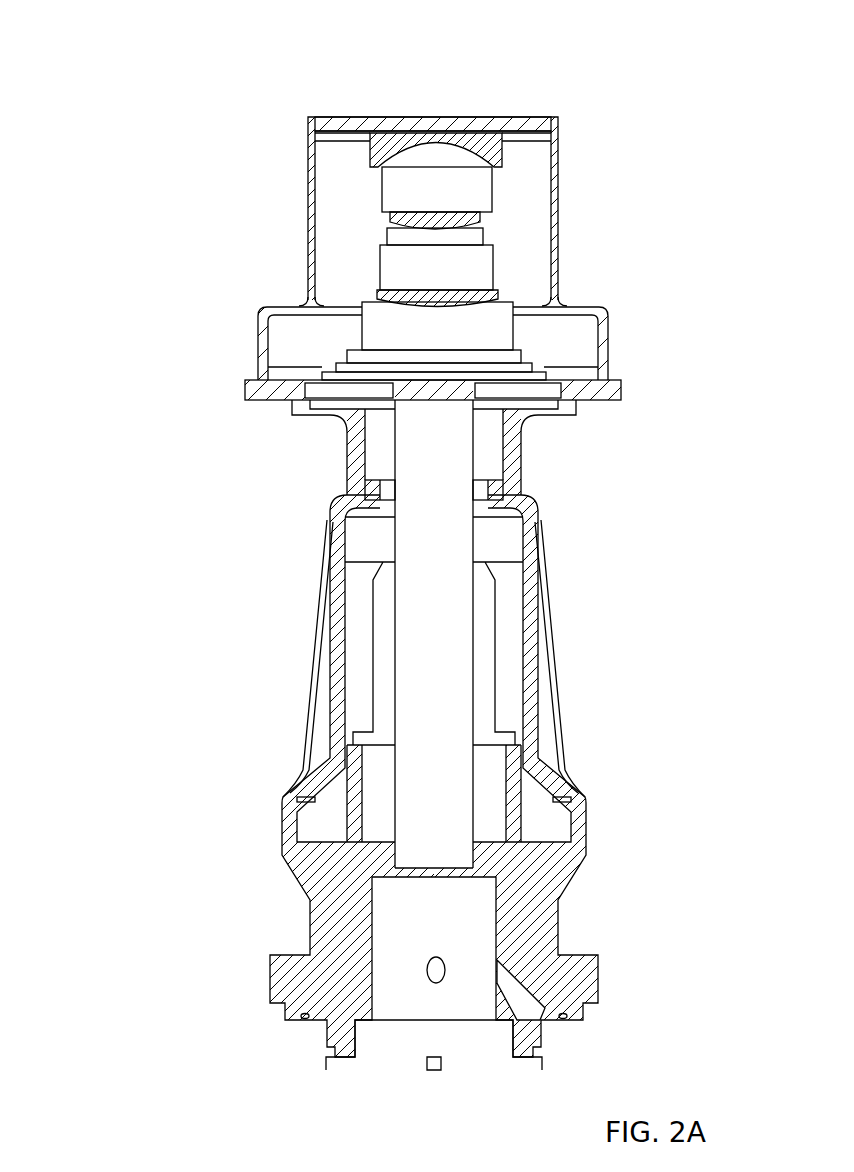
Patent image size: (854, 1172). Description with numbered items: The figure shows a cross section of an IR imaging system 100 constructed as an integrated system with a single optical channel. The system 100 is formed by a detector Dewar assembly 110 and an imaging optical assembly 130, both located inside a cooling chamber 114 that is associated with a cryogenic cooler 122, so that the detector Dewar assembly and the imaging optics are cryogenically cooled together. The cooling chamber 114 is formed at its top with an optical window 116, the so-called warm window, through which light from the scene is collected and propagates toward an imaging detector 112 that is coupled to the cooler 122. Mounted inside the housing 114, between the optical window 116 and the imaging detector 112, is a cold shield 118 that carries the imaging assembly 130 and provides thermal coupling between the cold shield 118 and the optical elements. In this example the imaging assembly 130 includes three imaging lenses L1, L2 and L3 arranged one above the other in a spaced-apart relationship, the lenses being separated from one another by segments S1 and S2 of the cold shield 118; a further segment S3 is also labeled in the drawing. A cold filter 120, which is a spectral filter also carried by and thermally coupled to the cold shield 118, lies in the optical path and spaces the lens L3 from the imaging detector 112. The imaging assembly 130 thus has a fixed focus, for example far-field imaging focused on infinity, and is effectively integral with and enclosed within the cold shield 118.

The IR imaging system 100 is at (406, 65).
The detector Dewar assembly 110 is at (220, 101).
The imaging detector 112 is at (513, 345).
The cooling chamber 114 is at (308, 238).
The optical window 116 is at (494, 124).
The cold shield 118 is at (517, 327).
The cold filter 120 is at (388, 338).
The cryogenic cooler 122 is at (430, 419).
The imaging optical assembly 130 is at (421, 285).
The first imaging lens L1 is at (374, 150).
The second imaging lens L2 is at (378, 208).
The third imaging lens L3 is at (373, 255).
The first cold shield segment S1 is at (492, 184).
The second cold shield segment S2 is at (487, 240).
The third spacer S3 is at (495, 290).